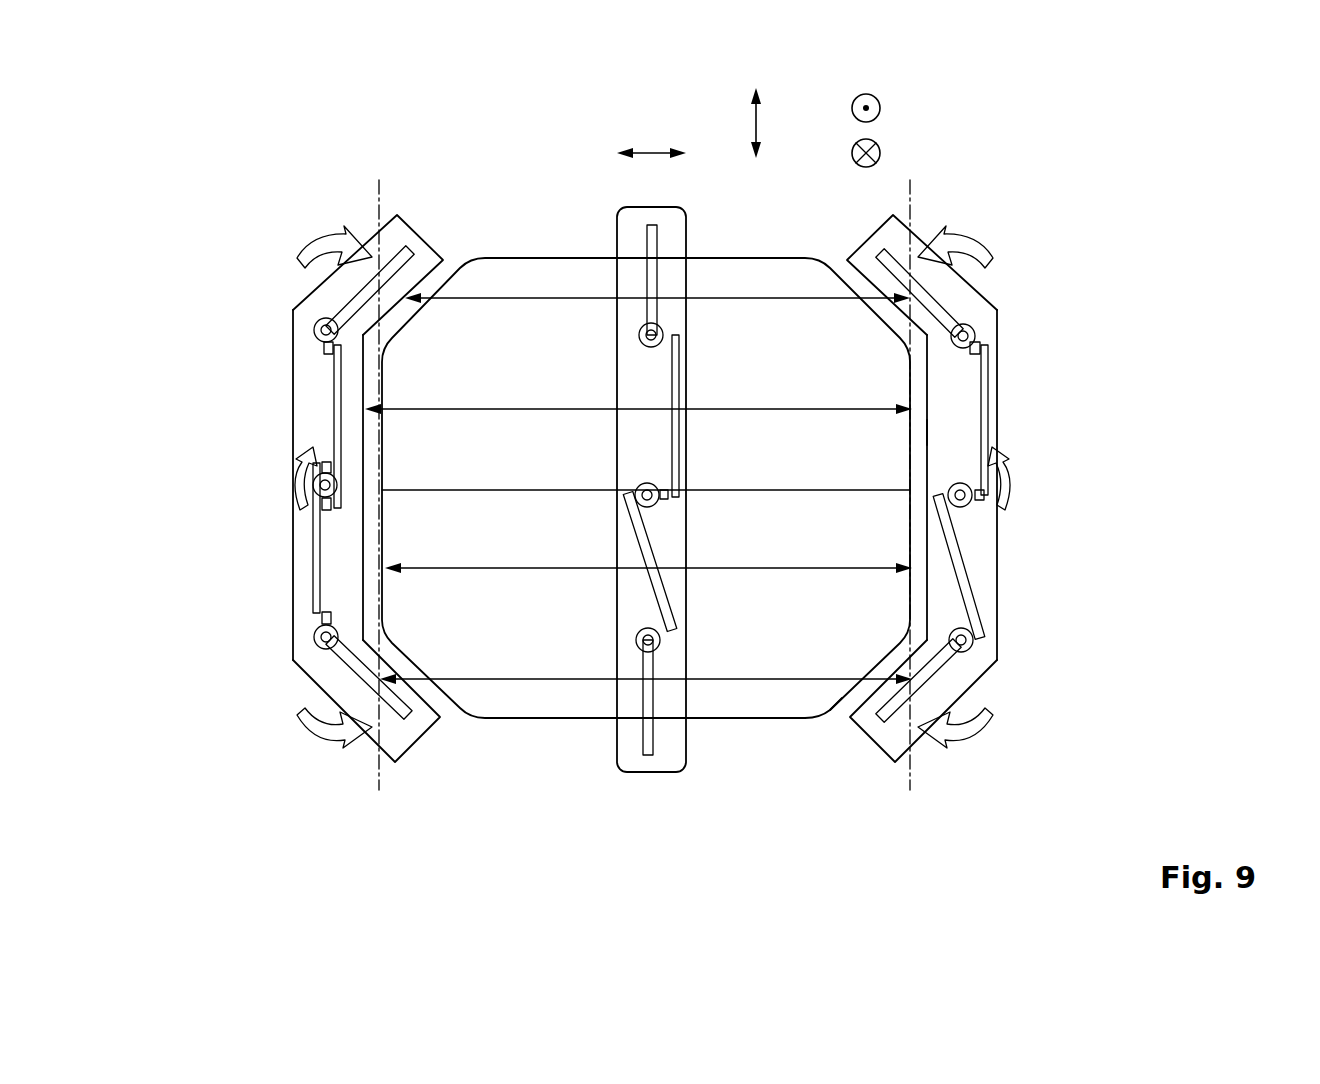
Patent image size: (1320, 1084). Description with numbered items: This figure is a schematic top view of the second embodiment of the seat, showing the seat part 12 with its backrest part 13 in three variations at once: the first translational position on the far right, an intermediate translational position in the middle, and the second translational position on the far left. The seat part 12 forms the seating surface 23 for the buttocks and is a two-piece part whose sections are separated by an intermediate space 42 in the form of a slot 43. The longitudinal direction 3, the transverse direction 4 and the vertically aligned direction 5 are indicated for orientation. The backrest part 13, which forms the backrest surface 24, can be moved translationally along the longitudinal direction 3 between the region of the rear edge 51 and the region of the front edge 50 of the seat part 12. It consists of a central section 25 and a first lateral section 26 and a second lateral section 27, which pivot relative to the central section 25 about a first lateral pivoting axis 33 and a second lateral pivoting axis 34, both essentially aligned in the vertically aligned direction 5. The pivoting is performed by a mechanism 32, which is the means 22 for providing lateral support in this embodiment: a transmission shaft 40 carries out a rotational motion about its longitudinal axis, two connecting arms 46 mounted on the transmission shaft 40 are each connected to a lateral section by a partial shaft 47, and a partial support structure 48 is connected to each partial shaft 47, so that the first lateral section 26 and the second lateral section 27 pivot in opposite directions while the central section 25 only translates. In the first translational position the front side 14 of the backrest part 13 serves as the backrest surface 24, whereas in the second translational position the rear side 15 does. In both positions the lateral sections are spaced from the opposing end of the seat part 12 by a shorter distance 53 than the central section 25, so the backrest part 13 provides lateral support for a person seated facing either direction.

The longitudinal direction 3 is at (650, 150).
The transverse direction 4 is at (758, 128).
The vertically aligned direction 5 is at (881, 108).
The seat part 12 is at (807, 257).
The backrest part 13 is at (304, 800).
The front side 14 is at (292, 399).
The rear side 15 is at (687, 540).
The means 22 is at (646, 496).
The seating surface 23 is at (836, 640).
The backrest surface 24 is at (645, 488).
The central section 25 is at (366, 541).
The first lateral section 26 is at (395, 307).
The second lateral section 27 is at (381, 655).
The mechanism 32 is at (646, 496).
The first lateral pivoting axis 33 is at (320, 322).
The second lateral pivoting axis 34 is at (320, 650).
The transmission shaft 40 is at (1034, 492).
The intermediate space 42 is at (646, 454).
The slot 43 is at (562, 488).
The connecting arm 46 is at (336, 430).
The partial shaft 47 is at (316, 331).
The partial support structure 48 is at (397, 232).
The front edge 50 is at (316, 540).
The rear edge 51 is at (917, 432).
The distance 53 is at (522, 296).